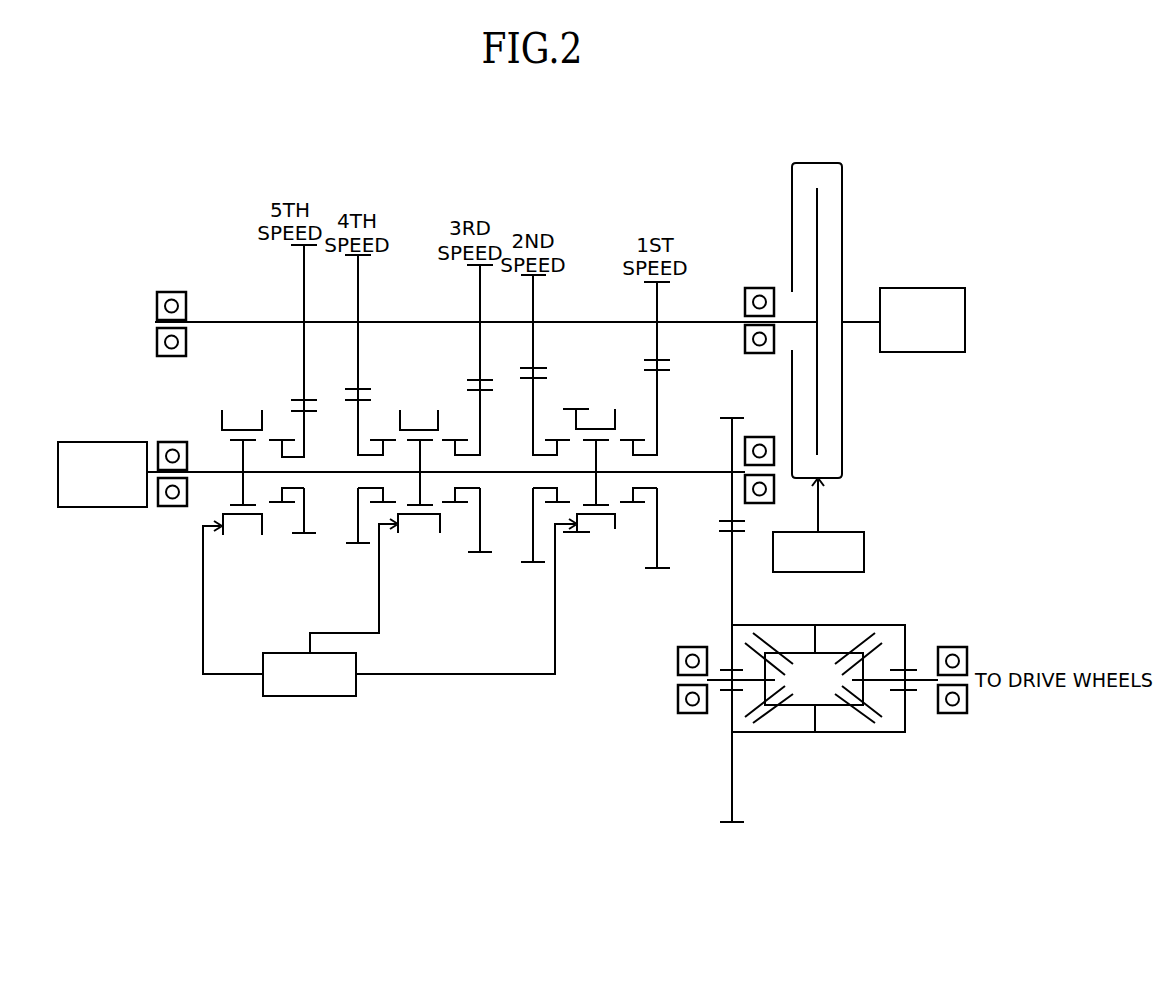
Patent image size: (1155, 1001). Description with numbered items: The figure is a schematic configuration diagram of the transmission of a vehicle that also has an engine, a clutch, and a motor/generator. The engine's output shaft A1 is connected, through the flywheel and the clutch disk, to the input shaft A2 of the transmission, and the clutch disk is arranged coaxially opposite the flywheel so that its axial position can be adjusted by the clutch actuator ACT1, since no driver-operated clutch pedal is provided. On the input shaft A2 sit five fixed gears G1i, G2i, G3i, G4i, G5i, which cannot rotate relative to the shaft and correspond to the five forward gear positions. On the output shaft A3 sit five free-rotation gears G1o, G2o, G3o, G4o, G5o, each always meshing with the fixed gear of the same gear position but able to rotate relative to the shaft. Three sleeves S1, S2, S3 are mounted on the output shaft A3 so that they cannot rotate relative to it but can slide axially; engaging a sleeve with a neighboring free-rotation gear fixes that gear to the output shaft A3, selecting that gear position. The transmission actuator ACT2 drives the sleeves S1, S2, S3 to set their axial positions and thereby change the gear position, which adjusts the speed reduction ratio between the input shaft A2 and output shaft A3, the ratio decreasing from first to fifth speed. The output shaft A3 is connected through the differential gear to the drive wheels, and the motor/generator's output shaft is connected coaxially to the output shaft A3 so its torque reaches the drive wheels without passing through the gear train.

The output shaft of the engine A1 is at (857, 318).
The input shaft of the transmission A2 is at (730, 319).
The output shaft of the transmission A3 is at (695, 470).
The clutch actuator ACT1 is at (818, 525).
The transmission actuator ACT2 is at (390, 607).
The fixed gear G5i is at (304, 272).
The fixed gear G4i is at (358, 307).
The fixed gear G3i is at (480, 274).
The fixed gear G2i is at (533, 307).
The fixed gear G1i is at (657, 305).
The free-rotation gear G5o is at (302, 430).
The free-rotation gear G4o is at (360, 420).
The free-rotation gear G3o is at (478, 418).
The free-rotation gear G2o is at (534, 405).
The free-rotation gear G1o is at (657, 391).
The sleeve S1 is at (616, 531).
The sleeve S2 is at (430, 529).
The sleeve S3 is at (260, 527).